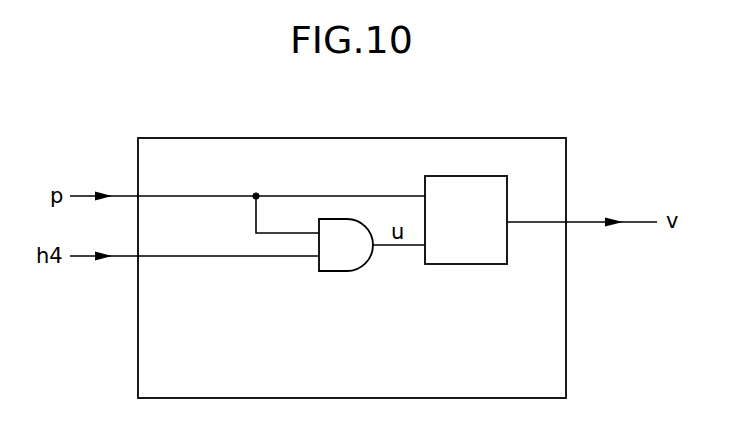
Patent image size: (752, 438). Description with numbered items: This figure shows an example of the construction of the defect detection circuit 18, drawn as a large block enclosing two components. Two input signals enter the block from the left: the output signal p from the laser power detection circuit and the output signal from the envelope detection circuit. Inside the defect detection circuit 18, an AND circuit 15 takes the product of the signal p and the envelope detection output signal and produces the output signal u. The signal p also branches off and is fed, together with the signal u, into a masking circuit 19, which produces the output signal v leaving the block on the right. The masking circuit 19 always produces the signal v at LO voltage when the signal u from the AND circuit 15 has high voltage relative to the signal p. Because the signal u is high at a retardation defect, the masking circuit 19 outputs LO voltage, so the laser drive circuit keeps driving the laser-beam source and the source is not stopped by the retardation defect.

The defect detection circuit 18 is at (357, 138).
The masking circuit 19 is at (465, 264).
The AND circuit 15 is at (334, 271).